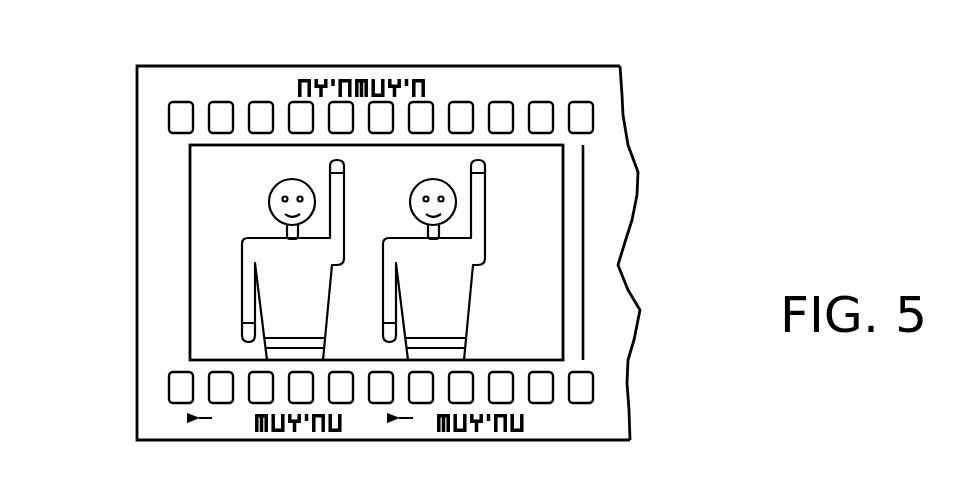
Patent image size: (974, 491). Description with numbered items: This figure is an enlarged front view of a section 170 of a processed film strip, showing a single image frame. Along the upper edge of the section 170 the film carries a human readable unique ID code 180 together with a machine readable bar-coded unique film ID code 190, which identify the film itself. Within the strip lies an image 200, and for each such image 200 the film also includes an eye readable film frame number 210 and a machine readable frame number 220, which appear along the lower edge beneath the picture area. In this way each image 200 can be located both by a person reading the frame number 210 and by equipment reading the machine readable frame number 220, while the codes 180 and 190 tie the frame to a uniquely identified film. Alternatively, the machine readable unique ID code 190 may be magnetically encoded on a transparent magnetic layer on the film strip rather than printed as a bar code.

The section of processed film strip 170 is at (615, 133).
The human readable unique ID code 180 is at (238, 76).
The machine readable bar-coded unique film ID code 190 is at (367, 74).
The image 200 is at (555, 258).
The eye readable film frame number 210 is at (227, 433).
The machine readable frame number 220 is at (347, 433).